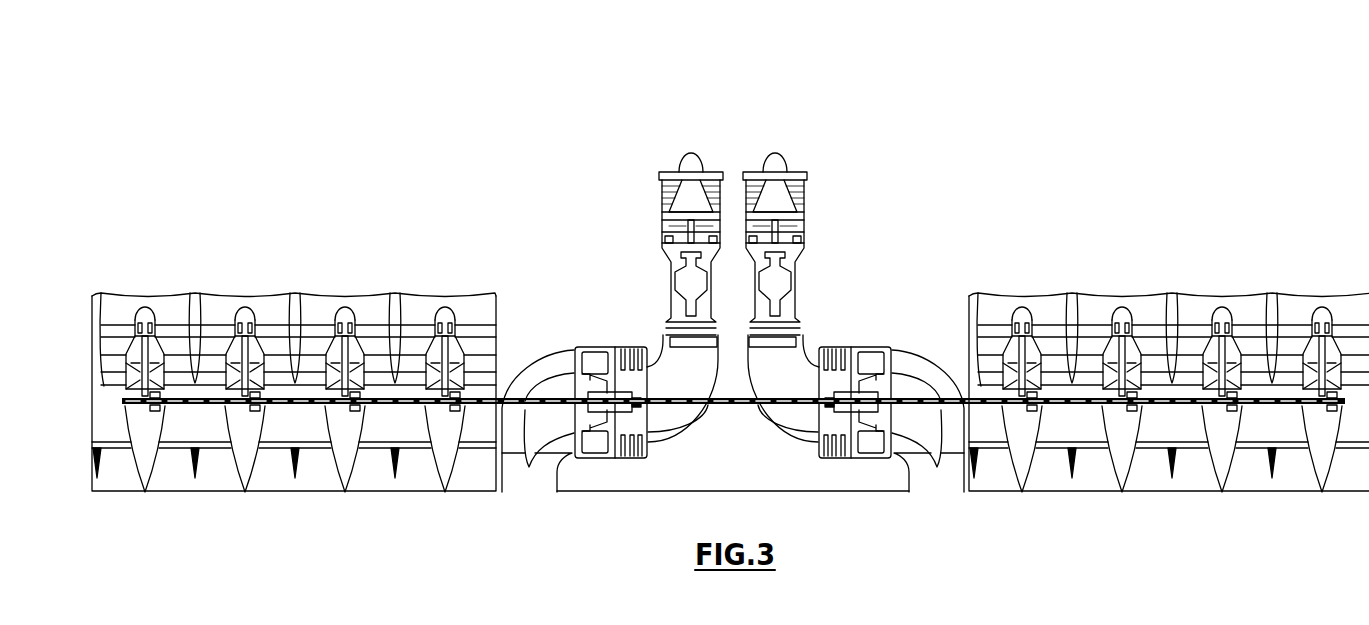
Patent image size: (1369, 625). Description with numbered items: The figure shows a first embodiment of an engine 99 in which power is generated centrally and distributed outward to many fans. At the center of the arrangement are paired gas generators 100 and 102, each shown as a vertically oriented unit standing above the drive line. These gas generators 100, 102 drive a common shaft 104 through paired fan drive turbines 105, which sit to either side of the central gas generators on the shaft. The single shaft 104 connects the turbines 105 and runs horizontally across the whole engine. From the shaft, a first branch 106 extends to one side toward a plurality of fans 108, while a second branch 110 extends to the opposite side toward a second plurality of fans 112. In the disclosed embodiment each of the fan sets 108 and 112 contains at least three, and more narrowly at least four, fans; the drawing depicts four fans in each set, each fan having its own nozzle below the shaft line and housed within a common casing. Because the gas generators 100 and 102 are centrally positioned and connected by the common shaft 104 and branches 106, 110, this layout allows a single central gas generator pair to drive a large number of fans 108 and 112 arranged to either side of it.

The engine 99 is at (830, 93).
The gas generator 100 is at (840, 183).
The gas generator 102 is at (707, 132).
The common shaft 104 is at (707, 406).
The fan drive turbines 105 is at (618, 347).
The first branch 106 is at (477, 406).
The fans 108 is at (290, 278).
The second branch 110 is at (988, 406).
The fans 112 is at (1132, 278).